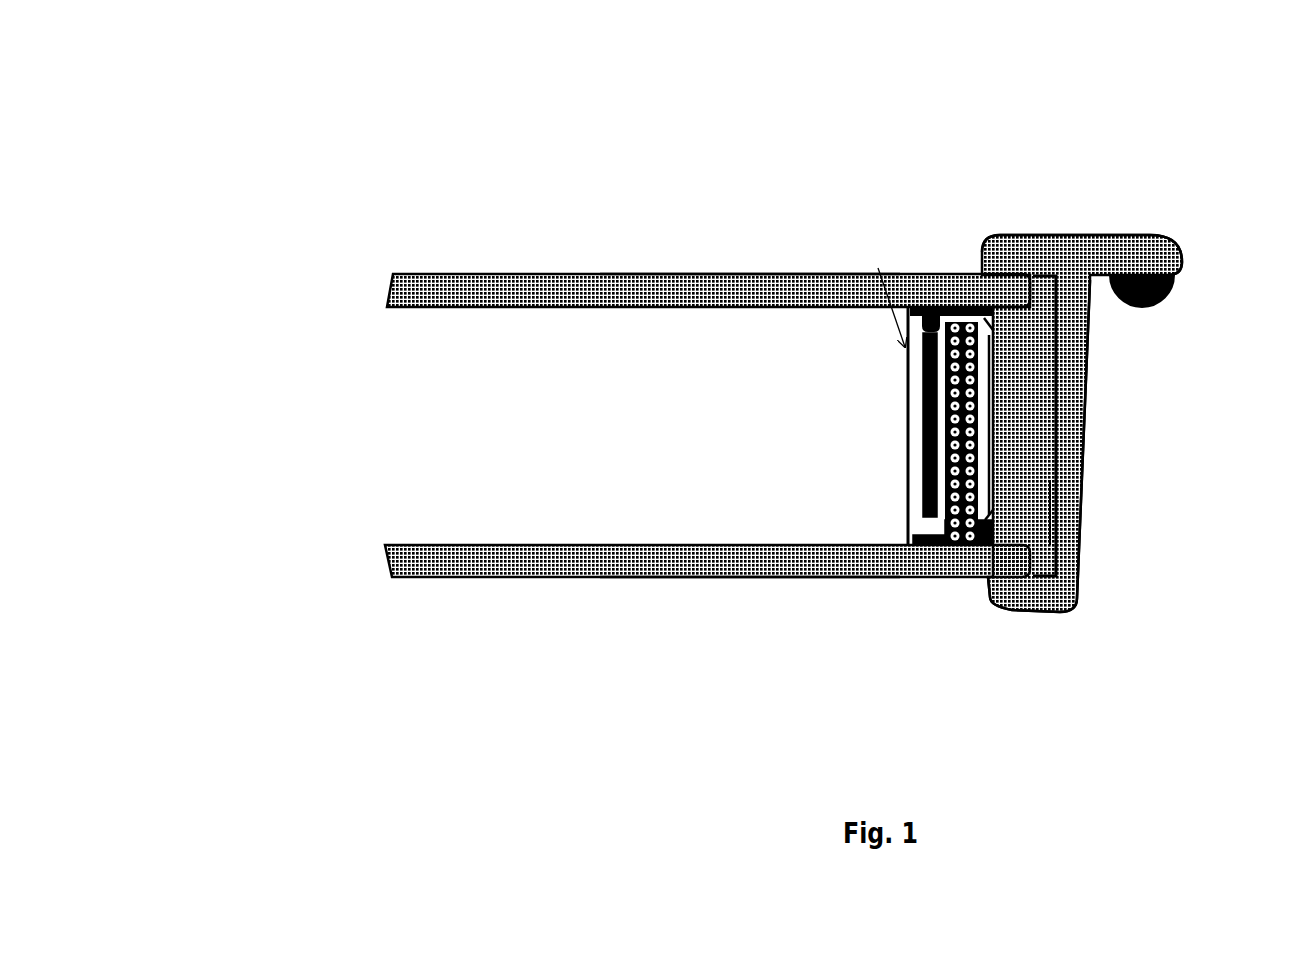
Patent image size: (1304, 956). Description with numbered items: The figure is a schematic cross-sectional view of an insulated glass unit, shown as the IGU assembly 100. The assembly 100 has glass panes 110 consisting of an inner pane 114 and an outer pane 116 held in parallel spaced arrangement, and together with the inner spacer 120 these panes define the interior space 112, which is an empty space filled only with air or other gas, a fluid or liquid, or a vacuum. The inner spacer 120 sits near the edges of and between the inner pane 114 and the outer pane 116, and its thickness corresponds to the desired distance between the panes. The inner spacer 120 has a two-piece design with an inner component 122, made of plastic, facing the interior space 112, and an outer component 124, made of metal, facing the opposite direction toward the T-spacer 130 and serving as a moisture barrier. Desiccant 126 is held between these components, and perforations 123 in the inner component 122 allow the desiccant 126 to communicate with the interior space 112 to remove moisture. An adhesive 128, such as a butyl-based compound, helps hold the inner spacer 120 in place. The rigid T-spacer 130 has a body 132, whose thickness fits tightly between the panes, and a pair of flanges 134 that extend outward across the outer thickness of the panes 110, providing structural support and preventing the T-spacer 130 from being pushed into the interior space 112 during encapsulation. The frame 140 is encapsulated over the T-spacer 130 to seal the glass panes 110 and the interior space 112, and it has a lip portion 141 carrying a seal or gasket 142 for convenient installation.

The IGU assembly 100 is at (540, 127).
The glass panes 110 is at (457, 270).
The interior space 112 is at (410, 435).
The inner pane 114 is at (763, 271).
The outer pane 116 is at (707, 582).
The inner spacer 120 is at (930, 548).
The inner component 122 is at (928, 408).
The perforations 123 is at (928, 327).
The outer component 124 is at (1067, 610).
The desiccant 126 is at (982, 560).
The adhesive 128 is at (982, 236).
The T-spacer 130 is at (1107, 423).
The body 132 is at (1063, 420).
The flanges 134 is at (1062, 576).
The frame 140 is at (1090, 343).
The lip portion 141 is at (1155, 245).
The seal or gasket 142 is at (1173, 292).